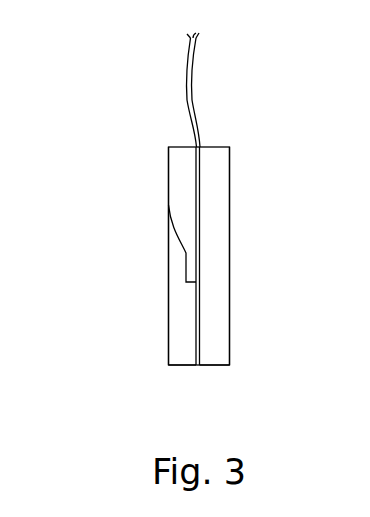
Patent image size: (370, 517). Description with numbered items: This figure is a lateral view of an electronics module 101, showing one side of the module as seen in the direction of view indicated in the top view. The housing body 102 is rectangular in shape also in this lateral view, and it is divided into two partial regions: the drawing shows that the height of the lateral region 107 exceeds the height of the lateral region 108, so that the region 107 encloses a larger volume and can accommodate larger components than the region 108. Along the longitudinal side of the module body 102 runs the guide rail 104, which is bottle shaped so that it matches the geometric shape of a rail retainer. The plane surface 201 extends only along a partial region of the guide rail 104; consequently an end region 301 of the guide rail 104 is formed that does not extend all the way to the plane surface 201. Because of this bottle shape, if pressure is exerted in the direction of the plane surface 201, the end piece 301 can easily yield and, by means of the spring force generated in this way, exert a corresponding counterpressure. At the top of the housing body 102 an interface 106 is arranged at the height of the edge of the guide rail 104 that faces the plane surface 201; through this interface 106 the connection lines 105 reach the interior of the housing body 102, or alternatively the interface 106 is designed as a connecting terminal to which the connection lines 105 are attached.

The electronics module 101 is at (125, 358).
The module body 102 is at (223, 366).
The left-hand guide rail 104 is at (177, 170).
The connection lines 105 is at (197, 64).
The interface 106 is at (199, 143).
The partial region 107 is at (214, 252).
The partial region 108 is at (177, 323).
The plane surface 201 is at (130, 199).
The end region 301 is at (189, 253).